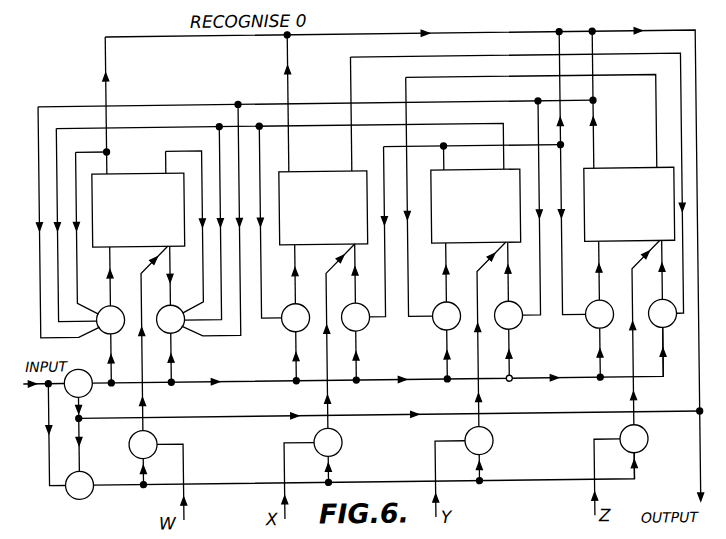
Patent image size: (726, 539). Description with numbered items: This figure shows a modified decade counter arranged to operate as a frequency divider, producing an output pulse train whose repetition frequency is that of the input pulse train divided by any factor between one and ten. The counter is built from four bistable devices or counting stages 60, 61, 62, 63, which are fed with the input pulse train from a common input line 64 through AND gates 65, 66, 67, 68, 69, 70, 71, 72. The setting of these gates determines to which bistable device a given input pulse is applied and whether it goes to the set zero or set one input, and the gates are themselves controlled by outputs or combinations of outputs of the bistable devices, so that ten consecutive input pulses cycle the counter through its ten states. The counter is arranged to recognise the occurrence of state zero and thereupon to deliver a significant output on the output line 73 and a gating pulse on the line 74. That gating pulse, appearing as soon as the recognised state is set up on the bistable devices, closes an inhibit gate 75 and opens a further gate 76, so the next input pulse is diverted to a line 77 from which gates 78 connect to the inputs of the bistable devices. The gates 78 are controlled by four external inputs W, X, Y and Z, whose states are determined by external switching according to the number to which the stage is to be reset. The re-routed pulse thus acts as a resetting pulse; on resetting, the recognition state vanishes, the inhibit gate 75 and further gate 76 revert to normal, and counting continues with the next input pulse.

The bistable device 60 is at (178, 240).
The bistable device 61 is at (360, 238).
The bistable device 62 is at (510, 236).
The bistable device 63 is at (666, 234).
The common input line 64 is at (276, 379).
The AND gate 65 is at (119, 306).
The AND gate 66 is at (179, 306).
The AND gate 67 is at (289, 305).
The AND gate 68 is at (364, 305).
The AND gate 69 is at (440, 305).
The AND gate 70 is at (516, 305).
The AND gate 71 is at (593, 305).
The AND gate 72 is at (656, 305).
The output line 73 is at (696, 436).
The gating pulse line 74 is at (245, 414).
The inhibit gate 75 is at (92, 369).
The further gate 76 is at (88, 493).
The line 77 is at (249, 481).
The gates 78 is at (152, 436).